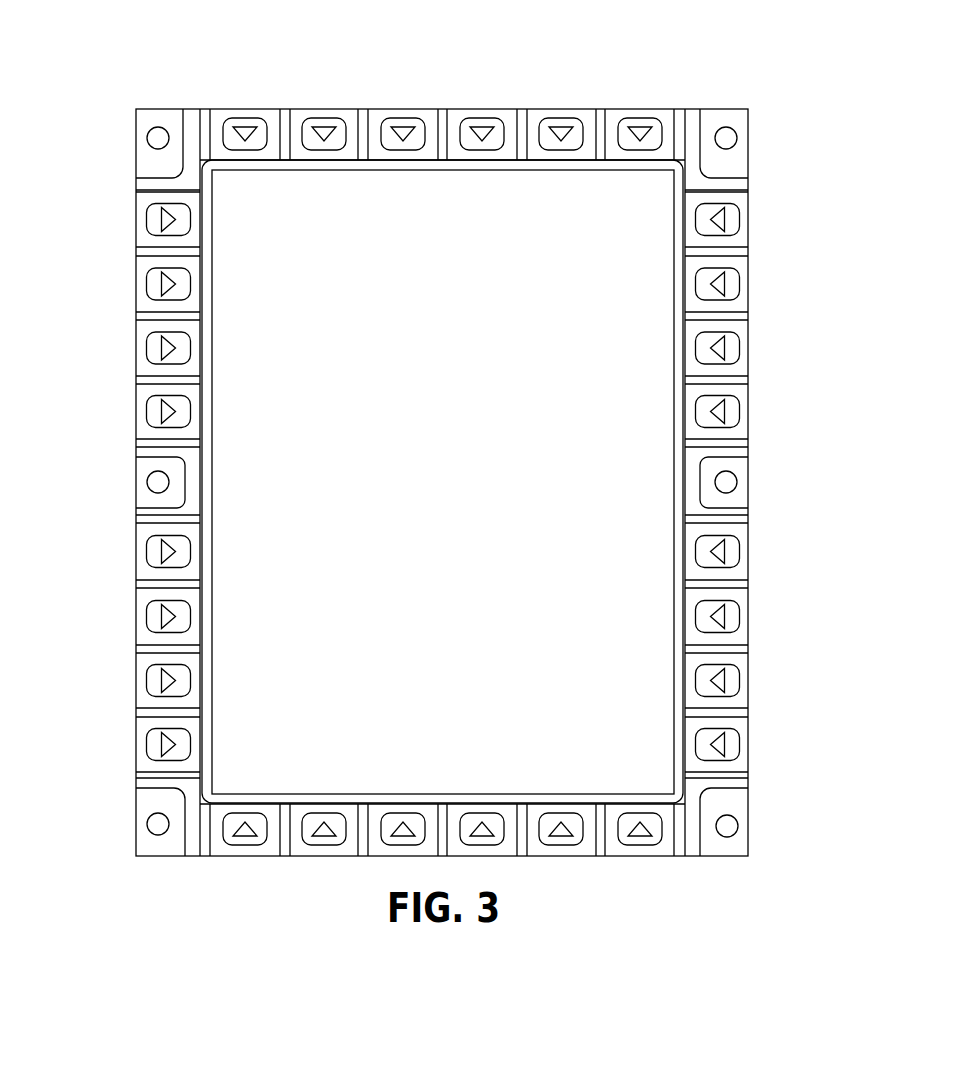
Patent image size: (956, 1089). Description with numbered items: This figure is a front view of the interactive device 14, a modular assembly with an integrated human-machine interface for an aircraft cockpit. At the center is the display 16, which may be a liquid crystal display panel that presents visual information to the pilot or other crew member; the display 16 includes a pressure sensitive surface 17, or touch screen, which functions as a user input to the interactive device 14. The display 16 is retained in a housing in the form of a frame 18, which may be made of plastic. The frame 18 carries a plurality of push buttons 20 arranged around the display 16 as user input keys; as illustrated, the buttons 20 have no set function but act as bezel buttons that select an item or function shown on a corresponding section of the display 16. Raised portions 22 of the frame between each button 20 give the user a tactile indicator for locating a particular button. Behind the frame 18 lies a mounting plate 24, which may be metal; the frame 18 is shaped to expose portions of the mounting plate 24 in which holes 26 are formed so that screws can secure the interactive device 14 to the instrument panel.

The interactive device 14 is at (210, 882).
The display 16 is at (660, 768).
The pressure sensitive surface 17 is at (466, 471).
The frame 18 is at (663, 122).
The push buttons 20 is at (561, 140).
The raised portions 22 is at (287, 118).
The mounting plate 24 is at (150, 165).
The holes 26 is at (160, 137).